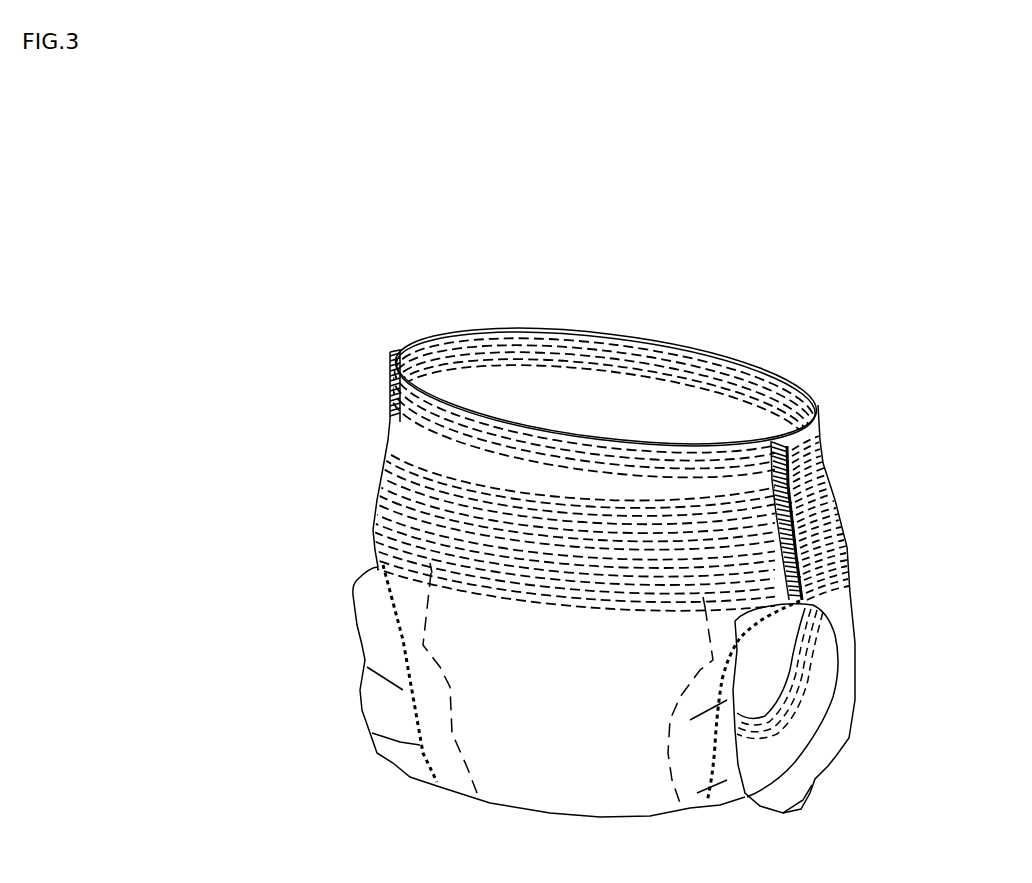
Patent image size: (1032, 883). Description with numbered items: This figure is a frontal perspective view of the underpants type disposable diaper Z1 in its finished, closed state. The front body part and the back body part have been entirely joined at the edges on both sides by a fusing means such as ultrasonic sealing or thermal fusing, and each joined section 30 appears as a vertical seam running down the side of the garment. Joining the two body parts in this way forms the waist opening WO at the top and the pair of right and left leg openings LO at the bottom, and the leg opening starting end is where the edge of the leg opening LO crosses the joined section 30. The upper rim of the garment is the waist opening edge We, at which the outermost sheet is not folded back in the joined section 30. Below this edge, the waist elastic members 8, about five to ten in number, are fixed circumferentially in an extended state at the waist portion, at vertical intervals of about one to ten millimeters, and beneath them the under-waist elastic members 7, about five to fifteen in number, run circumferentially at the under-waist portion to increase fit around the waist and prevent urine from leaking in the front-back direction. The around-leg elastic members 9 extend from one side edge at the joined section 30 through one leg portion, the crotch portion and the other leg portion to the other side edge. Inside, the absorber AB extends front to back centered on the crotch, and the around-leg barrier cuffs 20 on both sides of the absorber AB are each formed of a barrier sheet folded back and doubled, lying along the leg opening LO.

The disposable diaper Z1 is at (465, 291).
The waist opening WO is at (750, 353).
The waist opening edge We is at (500, 421).
The waist elastic members 8 is at (572, 448).
The under-waist elastic members 7 is at (567, 605).
The joined section 30 is at (790, 478).
The around-leg elastic members 9 is at (403, 641).
The absorber AB is at (450, 737).
The around-leg barrier cuffs 20 is at (815, 679).
The leg opening LO is at (842, 760).